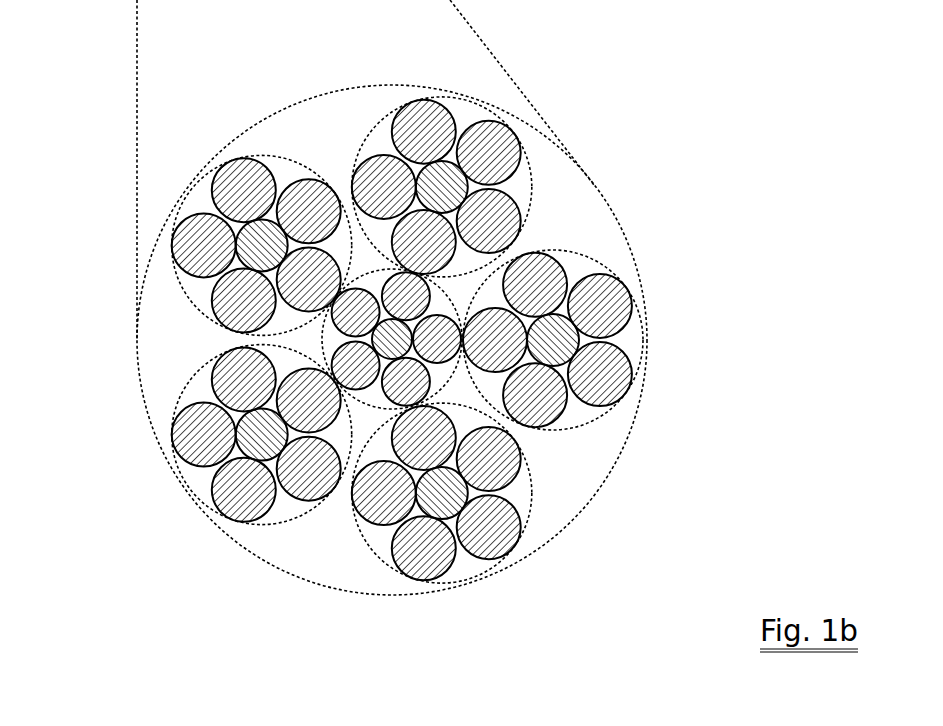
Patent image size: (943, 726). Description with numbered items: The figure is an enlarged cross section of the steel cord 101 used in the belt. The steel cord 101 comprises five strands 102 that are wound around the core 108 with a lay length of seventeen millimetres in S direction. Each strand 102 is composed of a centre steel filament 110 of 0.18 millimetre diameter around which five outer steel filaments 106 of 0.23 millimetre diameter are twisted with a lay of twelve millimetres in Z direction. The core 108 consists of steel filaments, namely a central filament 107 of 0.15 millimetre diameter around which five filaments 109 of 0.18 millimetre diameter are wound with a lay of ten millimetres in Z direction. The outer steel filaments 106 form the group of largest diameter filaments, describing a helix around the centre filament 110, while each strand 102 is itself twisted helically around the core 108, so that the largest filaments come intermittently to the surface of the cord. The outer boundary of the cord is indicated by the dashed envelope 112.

The steel cord 101 is at (668, 170).
The strand 102 is at (587, 383).
The outer steel filament 106 is at (670, 272).
The central filament 107 is at (307, 205).
The core 108 is at (238, 339).
The core filament 109 is at (297, 491).
The centre steel filament 110 is at (563, 338).
The outer envelope of cable 112 is at (424, 340).